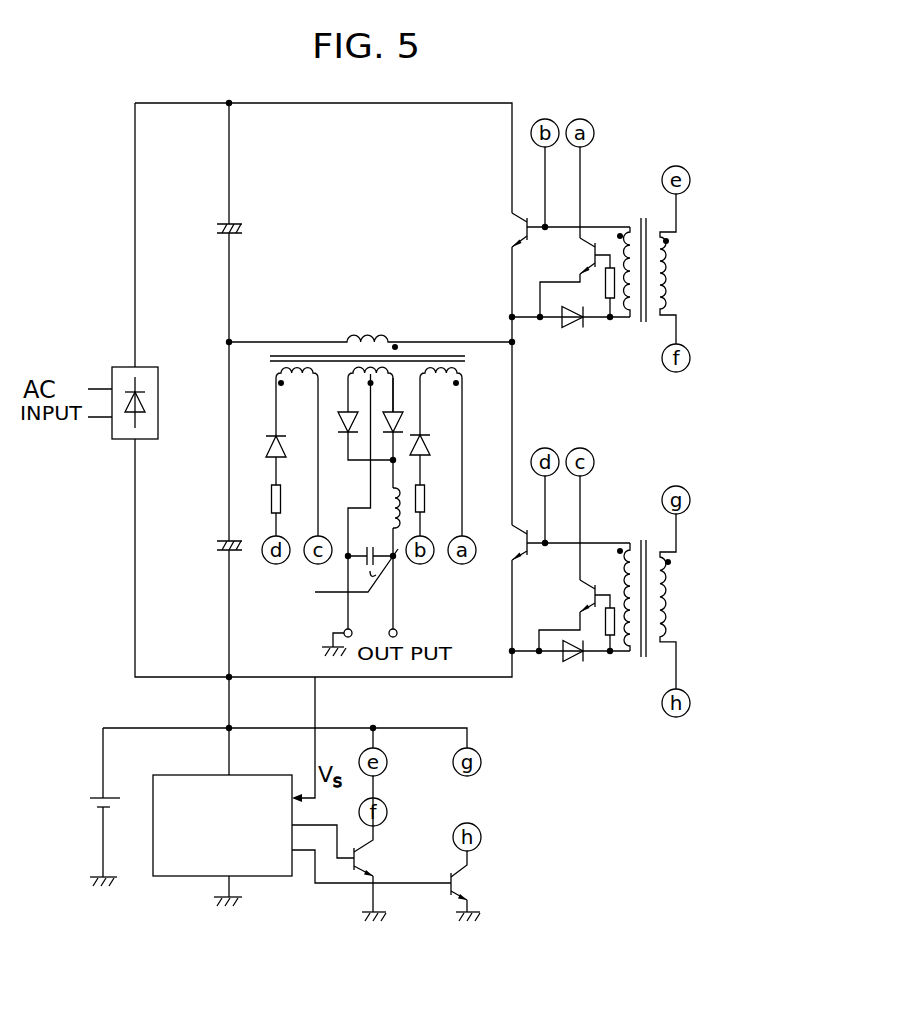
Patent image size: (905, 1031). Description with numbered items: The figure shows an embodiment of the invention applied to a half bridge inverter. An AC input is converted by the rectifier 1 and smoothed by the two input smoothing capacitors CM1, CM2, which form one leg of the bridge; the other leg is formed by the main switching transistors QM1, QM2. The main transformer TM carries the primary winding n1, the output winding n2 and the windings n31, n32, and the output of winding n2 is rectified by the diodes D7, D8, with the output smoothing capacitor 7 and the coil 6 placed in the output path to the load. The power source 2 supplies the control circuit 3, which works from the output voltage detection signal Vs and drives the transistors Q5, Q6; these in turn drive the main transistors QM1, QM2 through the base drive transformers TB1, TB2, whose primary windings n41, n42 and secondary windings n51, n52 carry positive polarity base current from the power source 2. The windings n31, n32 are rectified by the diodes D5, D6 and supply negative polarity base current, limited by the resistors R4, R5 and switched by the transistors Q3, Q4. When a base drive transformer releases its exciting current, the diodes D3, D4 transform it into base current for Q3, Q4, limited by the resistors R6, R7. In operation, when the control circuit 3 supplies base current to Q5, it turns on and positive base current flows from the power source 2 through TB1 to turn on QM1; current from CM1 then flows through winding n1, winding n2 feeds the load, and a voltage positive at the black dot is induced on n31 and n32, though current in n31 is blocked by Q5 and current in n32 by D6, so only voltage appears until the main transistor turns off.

The rectifier 1 is at (124, 366).
The power source 2 is at (86, 792).
The control circuit 3 is at (151, 795).
The inductor coil 6 is at (386, 516).
The output smoothing capacitor 7 is at (392, 582).
The input smoothing capacitor CM1 is at (272, 216).
The input smoothing capacitor CM2 is at (217, 544).
The main transformer TM is at (270, 360).
The primary winding n1 is at (372, 338).
The output winding n2 is at (362, 386).
The winding n31 is at (444, 384).
The winding n32 is at (300, 384).
The diode D3 is at (572, 328).
The diode D4 is at (582, 666).
The diode D5 is at (428, 450).
The diode D6 is at (266, 449).
The diode D7 is at (408, 431).
The diode D8 is at (348, 428).
The resistor R4 is at (425, 500).
The resistor R5 is at (281, 500).
The resistor R6 is at (606, 302).
The resistor R7 is at (618, 644).
The main switching transistor QM1 is at (510, 225).
The main switching transistor QM2 is at (514, 546).
The transistor Q3 is at (578, 257).
The transistor Q4 is at (578, 592).
The transistor Q5 is at (376, 856).
The transistor Q6 is at (470, 884).
The base drive transformer TB1 is at (642, 216).
The base drive transformer TB2 is at (646, 536).
The primary winding n41 is at (666, 280).
The primary winding n42 is at (668, 582).
The secondary winding n51 is at (620, 242).
The secondary winding n52 is at (620, 564).